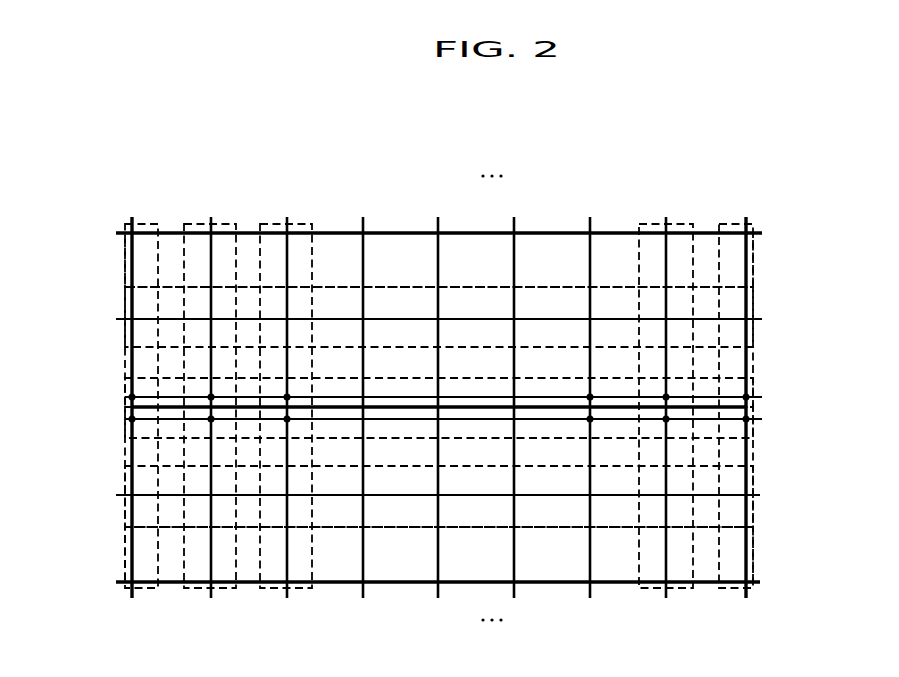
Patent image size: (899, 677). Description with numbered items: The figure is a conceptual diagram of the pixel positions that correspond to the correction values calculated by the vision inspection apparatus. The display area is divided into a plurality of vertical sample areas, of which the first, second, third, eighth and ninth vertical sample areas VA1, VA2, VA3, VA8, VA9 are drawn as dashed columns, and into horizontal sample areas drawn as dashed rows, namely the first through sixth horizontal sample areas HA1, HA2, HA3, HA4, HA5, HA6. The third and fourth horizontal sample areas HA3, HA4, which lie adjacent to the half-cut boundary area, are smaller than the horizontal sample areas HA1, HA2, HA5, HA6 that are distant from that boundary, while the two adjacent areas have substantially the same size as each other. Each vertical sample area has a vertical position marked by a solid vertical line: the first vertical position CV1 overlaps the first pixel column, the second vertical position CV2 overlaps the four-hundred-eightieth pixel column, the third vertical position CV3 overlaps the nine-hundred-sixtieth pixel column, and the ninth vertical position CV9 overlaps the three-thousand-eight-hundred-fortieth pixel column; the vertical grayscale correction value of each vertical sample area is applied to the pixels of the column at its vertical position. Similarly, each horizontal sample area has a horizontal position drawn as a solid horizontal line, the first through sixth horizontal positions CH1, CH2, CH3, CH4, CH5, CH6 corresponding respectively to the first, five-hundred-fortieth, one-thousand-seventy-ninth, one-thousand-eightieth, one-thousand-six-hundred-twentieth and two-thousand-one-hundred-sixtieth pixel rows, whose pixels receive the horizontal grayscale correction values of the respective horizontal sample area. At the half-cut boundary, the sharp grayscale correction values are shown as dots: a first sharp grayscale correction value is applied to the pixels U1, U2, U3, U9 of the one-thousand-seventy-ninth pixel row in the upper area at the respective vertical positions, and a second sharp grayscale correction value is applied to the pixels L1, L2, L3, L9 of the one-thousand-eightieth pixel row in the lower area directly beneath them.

The first vertical position CV1 is at (132, 378).
The second vertical position CV2 is at (211, 378).
The third vertical position CV3 is at (286, 378).
The ninth vertical position CV9 is at (746, 378).
The first horizontal position CH1 is at (477, 240).
The second horizontal position CH2 is at (489, 306).
The third horizontal position CH3 is at (497, 398).
The fourth horizontal position CH4 is at (497, 421).
The fifth horizontal position CH5 is at (753, 489).
The sixth horizontal position CH6 is at (753, 556).
The first horizontal sample area HA1 is at (125, 262).
The second horizontal sample area HA2 is at (125, 305).
The third horizontal sample area HA3 is at (127, 394).
The fourth horizontal sample area HA4 is at (127, 420).
The fifth horizontal sample area HA5 is at (125, 503).
The sixth horizontal sample area HA6 is at (125, 555).
The first vertical sample area VA1 is at (149, 588).
The second vertical sample area VA2 is at (228, 588).
The third vertical sample area VA3 is at (303, 588).
The eighth vertical sample area VA8 is at (645, 588).
The ninth vertical sample area VA9 is at (723, 588).
The pixel U1 is at (127, 386).
The pixel U2 is at (211, 396).
The pixel U3 is at (287, 396).
The pixel U9 is at (746, 396).
The pixel L1 is at (127, 426).
The pixel L2 is at (211, 420).
The pixel L3 is at (287, 421).
The pixel L9 is at (746, 421).